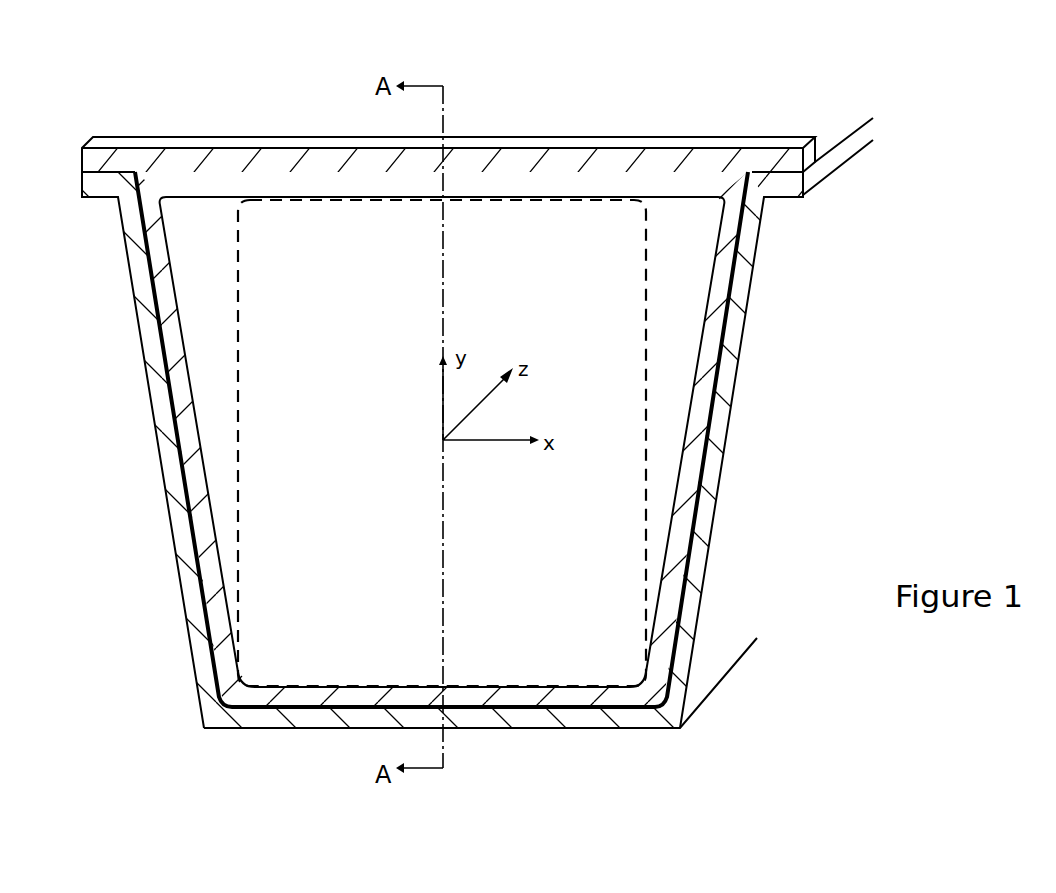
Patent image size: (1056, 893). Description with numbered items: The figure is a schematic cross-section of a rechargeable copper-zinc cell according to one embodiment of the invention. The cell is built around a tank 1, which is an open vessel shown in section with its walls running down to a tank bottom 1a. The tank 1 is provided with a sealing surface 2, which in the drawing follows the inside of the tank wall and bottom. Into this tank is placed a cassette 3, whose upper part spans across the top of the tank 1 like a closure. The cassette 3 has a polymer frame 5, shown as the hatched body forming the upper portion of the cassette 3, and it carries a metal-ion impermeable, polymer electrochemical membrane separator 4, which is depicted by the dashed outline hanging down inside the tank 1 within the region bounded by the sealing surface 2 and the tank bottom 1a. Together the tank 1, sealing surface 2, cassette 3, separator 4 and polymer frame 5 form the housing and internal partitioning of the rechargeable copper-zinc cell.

The tank 1 is at (722, 412).
The tank bottom 1a is at (493, 728).
The sealing surface 2 is at (588, 707).
The cassette 3 is at (577, 145).
The metal-ion impermeable, polymer electrochemical membrane separator 4 is at (243, 300).
The polymer frame 5 is at (516, 165).